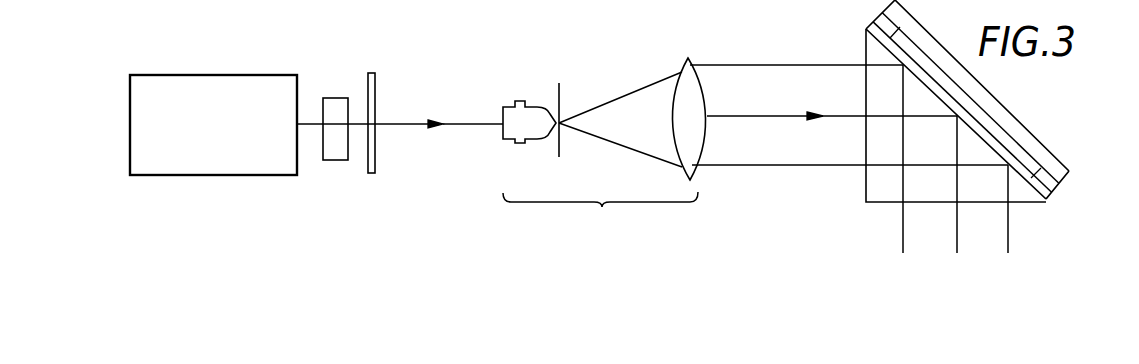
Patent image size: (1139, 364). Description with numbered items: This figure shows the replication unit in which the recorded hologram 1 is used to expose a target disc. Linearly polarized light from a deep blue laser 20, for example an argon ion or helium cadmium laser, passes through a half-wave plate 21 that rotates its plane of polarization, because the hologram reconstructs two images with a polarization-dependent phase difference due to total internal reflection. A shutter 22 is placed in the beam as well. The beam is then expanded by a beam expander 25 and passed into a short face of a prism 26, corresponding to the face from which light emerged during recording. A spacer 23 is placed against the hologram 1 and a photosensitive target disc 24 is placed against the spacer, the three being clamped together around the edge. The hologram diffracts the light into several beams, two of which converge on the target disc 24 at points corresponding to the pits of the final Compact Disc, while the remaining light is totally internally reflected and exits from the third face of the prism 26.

The deep blue laser 20 is at (202, 168).
The half-wave plate 21 is at (375, 92).
The shutter 22 is at (338, 98).
The beam expander 25 is at (574, 145).
The prism 26 is at (877, 185).
The hologram 1 is at (994, 116).
The spacer 23 is at (1063, 187).
The photosensitive target disc 24 is at (1069, 172).